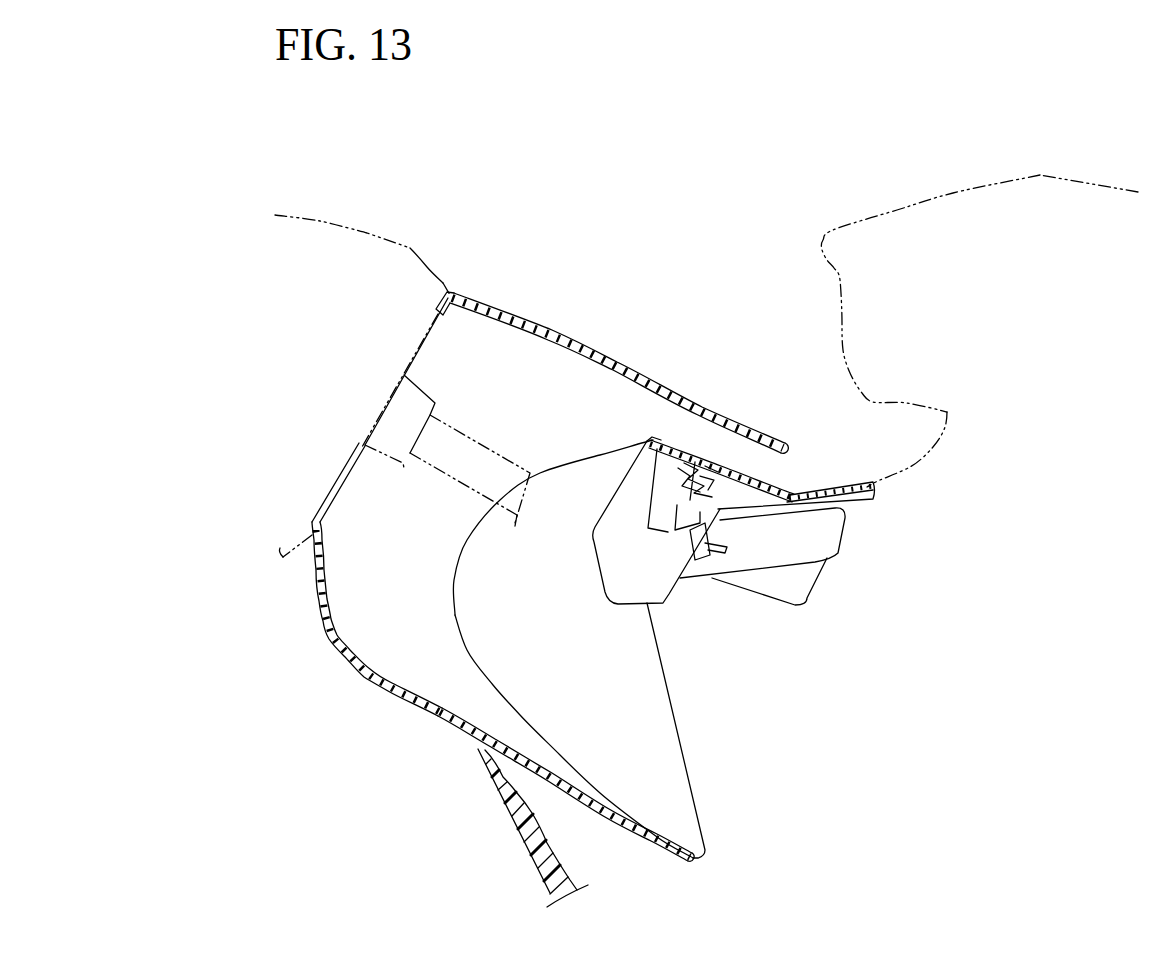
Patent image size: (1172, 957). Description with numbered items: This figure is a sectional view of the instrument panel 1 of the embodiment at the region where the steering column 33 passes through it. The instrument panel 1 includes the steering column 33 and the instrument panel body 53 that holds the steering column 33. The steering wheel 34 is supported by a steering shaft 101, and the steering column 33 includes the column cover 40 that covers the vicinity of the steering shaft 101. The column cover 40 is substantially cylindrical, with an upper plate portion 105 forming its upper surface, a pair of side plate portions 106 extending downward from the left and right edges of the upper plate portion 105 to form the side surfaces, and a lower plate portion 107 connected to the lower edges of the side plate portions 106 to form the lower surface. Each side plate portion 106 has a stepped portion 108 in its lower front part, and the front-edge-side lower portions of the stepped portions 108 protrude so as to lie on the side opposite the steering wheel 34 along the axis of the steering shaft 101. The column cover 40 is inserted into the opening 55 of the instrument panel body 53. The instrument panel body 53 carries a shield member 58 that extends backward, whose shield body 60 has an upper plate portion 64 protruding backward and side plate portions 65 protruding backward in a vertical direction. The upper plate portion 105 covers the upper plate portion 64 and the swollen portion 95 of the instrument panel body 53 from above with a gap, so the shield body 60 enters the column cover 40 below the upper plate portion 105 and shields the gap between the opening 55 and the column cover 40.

The instrument panel 1 is at (796, 199).
The steering wheel 34 is at (367, 233).
The column cover 40 is at (313, 630).
The steering shaft 101 is at (478, 442).
The upper plate portion 105 is at (583, 342).
The steering column 33 is at (350, 672).
The lower plate portion 107 is at (418, 703).
The stepped portion 108 is at (650, 732).
The side plate portion 106 is at (415, 635).
The opening 55 is at (483, 750).
The shield body 60 is at (590, 552).
The side plate portion 65 is at (612, 583).
The shield member 58 is at (661, 432).
The upper plate portion 64 is at (687, 462).
The swollen portion 95 is at (762, 482).
The instrument panel body 53 is at (841, 475).